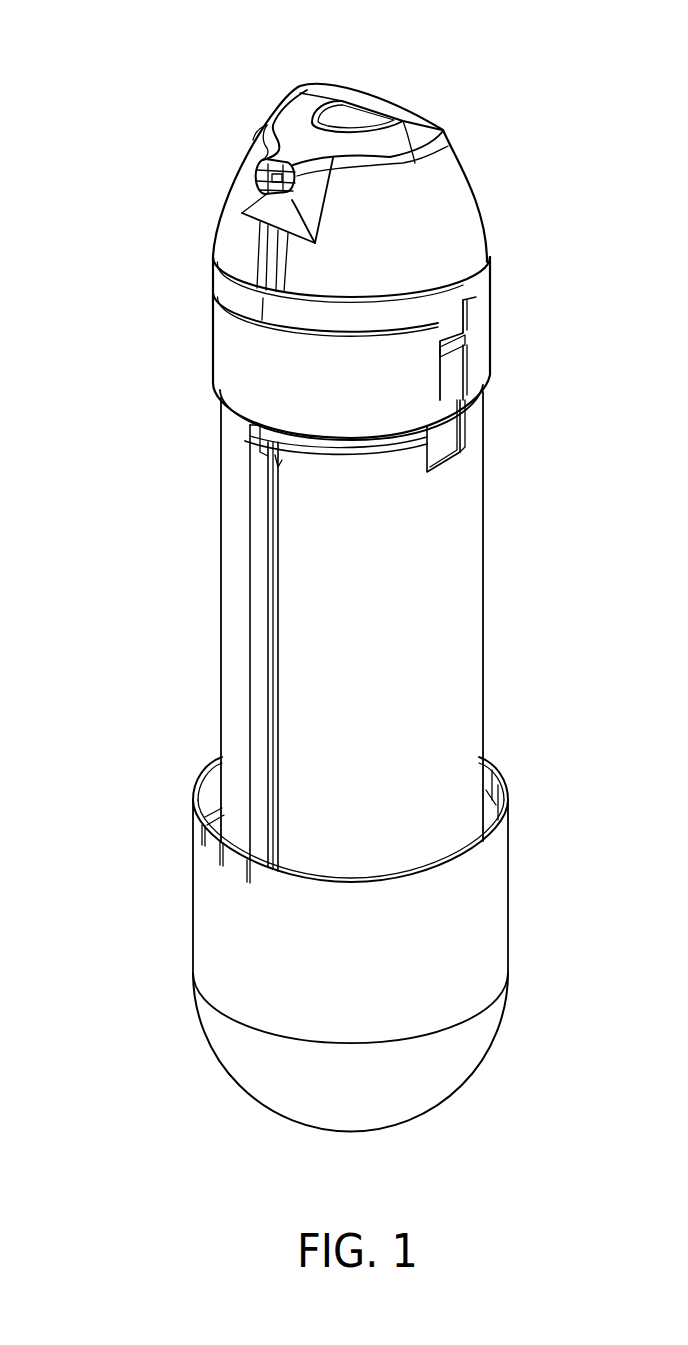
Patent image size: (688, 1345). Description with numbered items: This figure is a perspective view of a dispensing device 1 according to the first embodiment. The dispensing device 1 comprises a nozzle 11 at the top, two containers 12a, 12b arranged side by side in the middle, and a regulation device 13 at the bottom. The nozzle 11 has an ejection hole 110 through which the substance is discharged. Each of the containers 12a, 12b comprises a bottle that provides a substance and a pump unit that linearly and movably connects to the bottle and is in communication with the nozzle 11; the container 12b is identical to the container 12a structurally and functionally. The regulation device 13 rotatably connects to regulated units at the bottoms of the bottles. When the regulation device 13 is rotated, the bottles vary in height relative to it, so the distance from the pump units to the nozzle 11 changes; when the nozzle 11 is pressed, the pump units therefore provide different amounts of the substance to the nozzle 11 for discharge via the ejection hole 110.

The dispensing device 1 is at (65, 49).
The nozzle 11 is at (480, 173).
The ejection hole 110 is at (255, 165).
The container 12a is at (440, 538).
The container 12b is at (230, 622).
The regulation device 13 is at (510, 918).